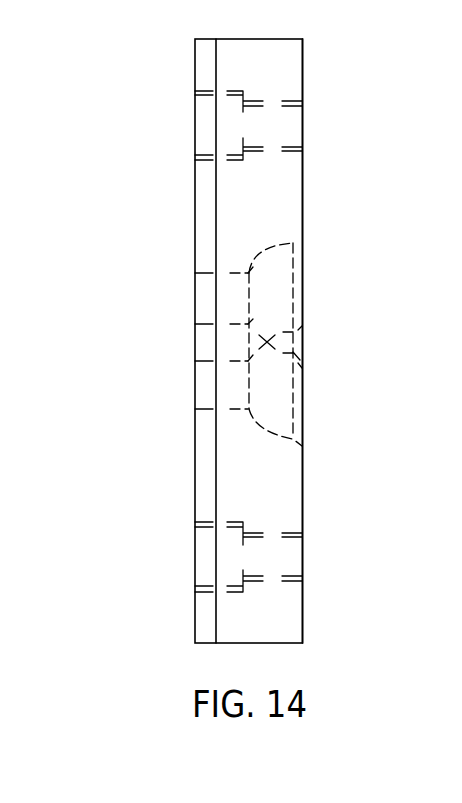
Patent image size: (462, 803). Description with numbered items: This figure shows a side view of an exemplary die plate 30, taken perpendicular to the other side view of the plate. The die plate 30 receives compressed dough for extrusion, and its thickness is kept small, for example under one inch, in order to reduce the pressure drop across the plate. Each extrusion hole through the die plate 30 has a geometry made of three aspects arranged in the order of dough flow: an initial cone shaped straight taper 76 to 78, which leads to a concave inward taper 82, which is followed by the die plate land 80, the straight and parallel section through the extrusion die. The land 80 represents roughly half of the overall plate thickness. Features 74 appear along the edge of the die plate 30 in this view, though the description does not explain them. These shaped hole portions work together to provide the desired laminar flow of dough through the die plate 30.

The die plate 30 is at (375, 160).
The flange connections 74 is at (207, 125).
The cone shaped straight taper 76 is at (298, 240).
The cone shaped straight taper 78 is at (293, 243).
The die plate land 80 is at (203, 309).
The concave inward taper 82 is at (262, 253).